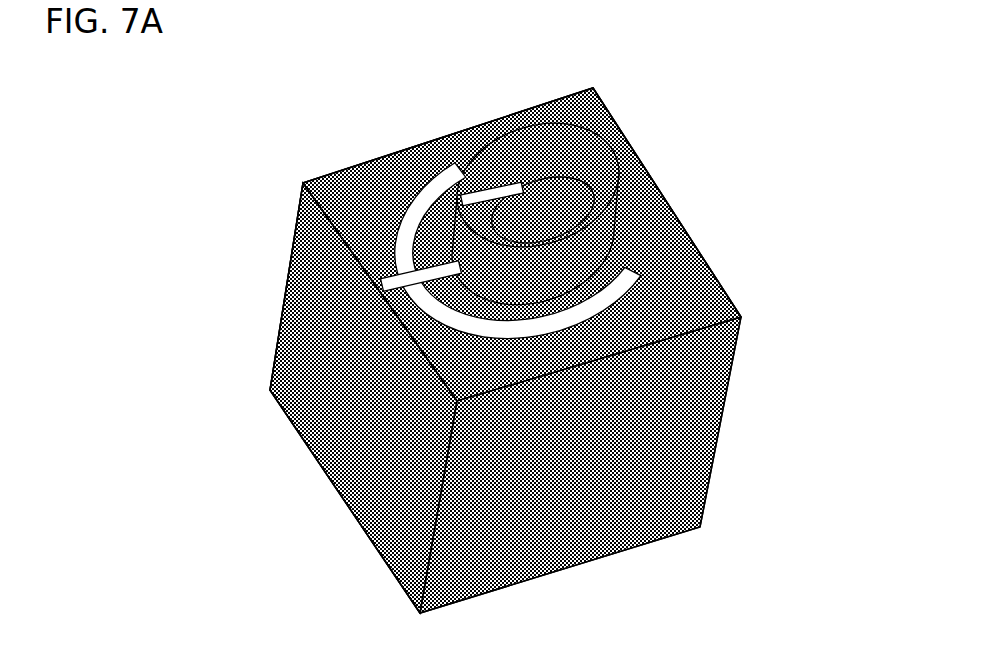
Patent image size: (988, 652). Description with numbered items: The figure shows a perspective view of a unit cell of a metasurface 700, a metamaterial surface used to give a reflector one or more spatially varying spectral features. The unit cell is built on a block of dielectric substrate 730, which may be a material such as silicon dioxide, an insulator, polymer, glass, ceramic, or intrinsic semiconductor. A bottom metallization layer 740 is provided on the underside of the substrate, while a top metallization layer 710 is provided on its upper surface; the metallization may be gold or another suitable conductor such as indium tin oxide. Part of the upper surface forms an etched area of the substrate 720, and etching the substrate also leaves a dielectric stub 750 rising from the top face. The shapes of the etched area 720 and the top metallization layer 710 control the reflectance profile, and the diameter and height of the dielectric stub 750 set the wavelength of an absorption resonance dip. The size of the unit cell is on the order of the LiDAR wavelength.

The metasurface unit cell 700 is at (472, 42).
The top metallization layer 710 is at (402, 204).
The etched area of the substrate 720 is at (653, 228).
The dielectric substrate 730 is at (685, 418).
The bottom metallization layer 740 is at (360, 523).
The dielectric stub 750 is at (560, 130).